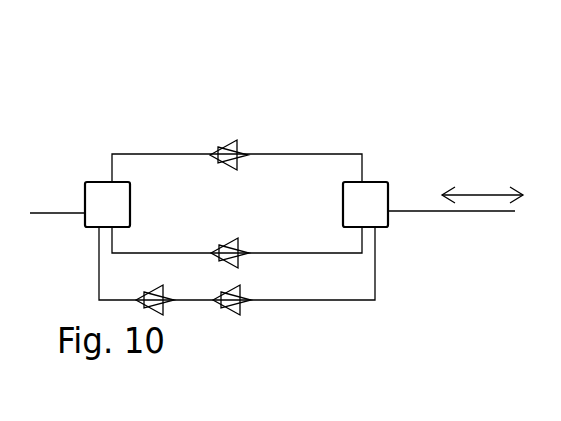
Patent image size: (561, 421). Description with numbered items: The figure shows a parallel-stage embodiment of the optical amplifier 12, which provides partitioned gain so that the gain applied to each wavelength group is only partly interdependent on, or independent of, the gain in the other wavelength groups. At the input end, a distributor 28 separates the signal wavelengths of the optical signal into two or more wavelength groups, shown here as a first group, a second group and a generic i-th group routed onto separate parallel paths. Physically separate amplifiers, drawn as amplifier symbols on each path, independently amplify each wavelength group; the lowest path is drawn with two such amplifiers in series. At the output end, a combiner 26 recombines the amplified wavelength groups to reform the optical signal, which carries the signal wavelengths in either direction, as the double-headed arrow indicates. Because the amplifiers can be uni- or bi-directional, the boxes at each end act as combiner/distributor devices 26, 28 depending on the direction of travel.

The optical amplifier 12 is at (238, 118).
The combiner 26 is at (236, 177).
The distributor 28 is at (85, 198).